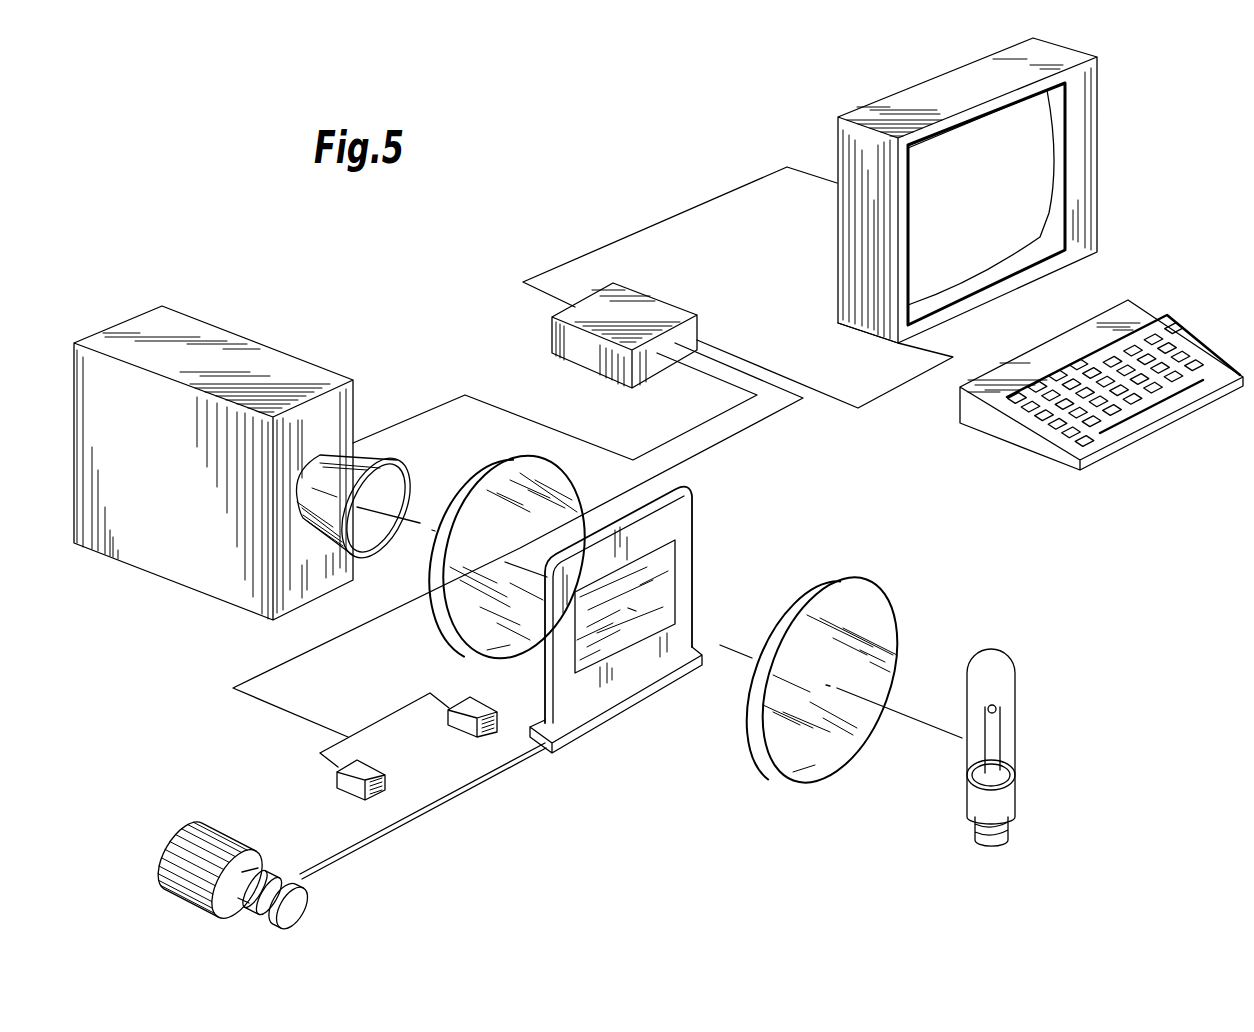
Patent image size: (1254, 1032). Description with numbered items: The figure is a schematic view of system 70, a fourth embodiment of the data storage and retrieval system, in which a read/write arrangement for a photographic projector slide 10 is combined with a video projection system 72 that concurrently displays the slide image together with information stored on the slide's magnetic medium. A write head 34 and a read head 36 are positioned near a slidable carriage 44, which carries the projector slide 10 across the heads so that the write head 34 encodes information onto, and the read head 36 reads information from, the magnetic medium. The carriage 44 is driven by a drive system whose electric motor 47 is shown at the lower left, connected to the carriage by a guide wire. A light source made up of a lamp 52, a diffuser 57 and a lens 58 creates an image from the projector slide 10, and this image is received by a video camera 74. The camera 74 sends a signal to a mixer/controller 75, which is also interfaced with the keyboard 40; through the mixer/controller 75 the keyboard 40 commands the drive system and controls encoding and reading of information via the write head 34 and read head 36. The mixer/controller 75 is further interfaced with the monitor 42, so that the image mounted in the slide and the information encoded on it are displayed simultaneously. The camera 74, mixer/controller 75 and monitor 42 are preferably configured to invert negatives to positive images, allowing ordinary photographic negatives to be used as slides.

The projector slide 10 is at (668, 513).
The write head 34 is at (463, 723).
The read head 36 is at (353, 787).
The keyboard 40 is at (1183, 342).
The monitor 42 is at (1093, 140).
The carriage 44 is at (618, 710).
The electric motor 47 is at (200, 843).
The lamp 52 is at (998, 800).
The diffuser 57 is at (863, 613).
The lens 58 is at (507, 497).
The system 70 is at (632, 780).
The video projection system 72 is at (760, 521).
The video camera 74 is at (293, 372).
The mixer/controller 75 is at (648, 307).